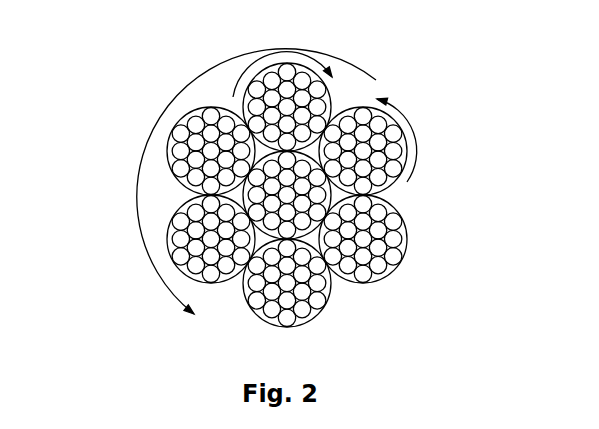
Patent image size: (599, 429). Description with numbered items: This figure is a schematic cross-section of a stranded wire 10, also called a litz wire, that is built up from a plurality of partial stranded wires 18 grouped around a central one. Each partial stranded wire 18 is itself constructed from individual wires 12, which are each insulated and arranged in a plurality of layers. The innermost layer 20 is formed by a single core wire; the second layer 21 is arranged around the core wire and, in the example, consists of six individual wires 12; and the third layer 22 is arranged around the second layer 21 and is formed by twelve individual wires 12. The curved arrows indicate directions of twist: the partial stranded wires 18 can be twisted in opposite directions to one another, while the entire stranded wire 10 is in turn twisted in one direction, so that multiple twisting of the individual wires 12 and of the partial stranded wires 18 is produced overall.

The stranded wire 10 is at (325, 176).
The individual wire 12 is at (413, 266).
The partial stranded wire 18 is at (405, 213).
The innermost layer 20 is at (402, 223).
The second layer 21 is at (365, 238).
The third layer 22 is at (392, 257).